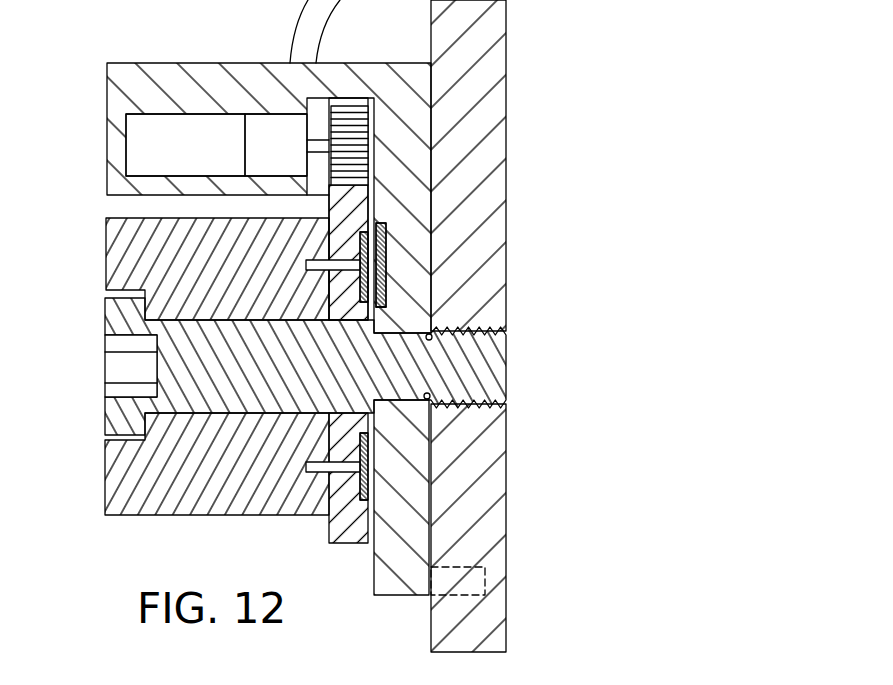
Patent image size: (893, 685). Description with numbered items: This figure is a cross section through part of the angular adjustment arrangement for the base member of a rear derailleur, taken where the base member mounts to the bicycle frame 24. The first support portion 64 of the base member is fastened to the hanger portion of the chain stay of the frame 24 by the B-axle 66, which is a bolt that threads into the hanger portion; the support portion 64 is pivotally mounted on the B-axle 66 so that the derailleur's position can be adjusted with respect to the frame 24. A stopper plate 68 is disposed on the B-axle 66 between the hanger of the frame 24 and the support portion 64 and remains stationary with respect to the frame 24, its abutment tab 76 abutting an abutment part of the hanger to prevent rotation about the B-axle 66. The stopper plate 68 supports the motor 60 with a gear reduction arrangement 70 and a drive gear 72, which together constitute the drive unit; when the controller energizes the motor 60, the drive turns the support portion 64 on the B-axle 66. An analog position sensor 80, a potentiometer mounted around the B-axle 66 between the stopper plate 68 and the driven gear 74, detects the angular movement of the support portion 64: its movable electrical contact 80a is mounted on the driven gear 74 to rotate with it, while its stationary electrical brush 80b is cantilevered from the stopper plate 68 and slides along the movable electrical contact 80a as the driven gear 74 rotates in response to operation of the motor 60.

The frame 24 is at (514, 97).
The motor 60 is at (198, 113).
The gear reduction arrangement 70 is at (274, 113).
The drive gear 72 is at (355, 106).
The stopper plate 68 is at (433, 248).
The driven gear 74 is at (347, 529).
The first support portion 64 is at (106, 246).
The B-axle 66 is at (106, 318).
The analog position sensor 80 is at (460, 341).
The movable electrical contact 80a is at (378, 308).
The stationary electrical brush 80b is at (384, 277).
The abutment tab 76 is at (457, 597).